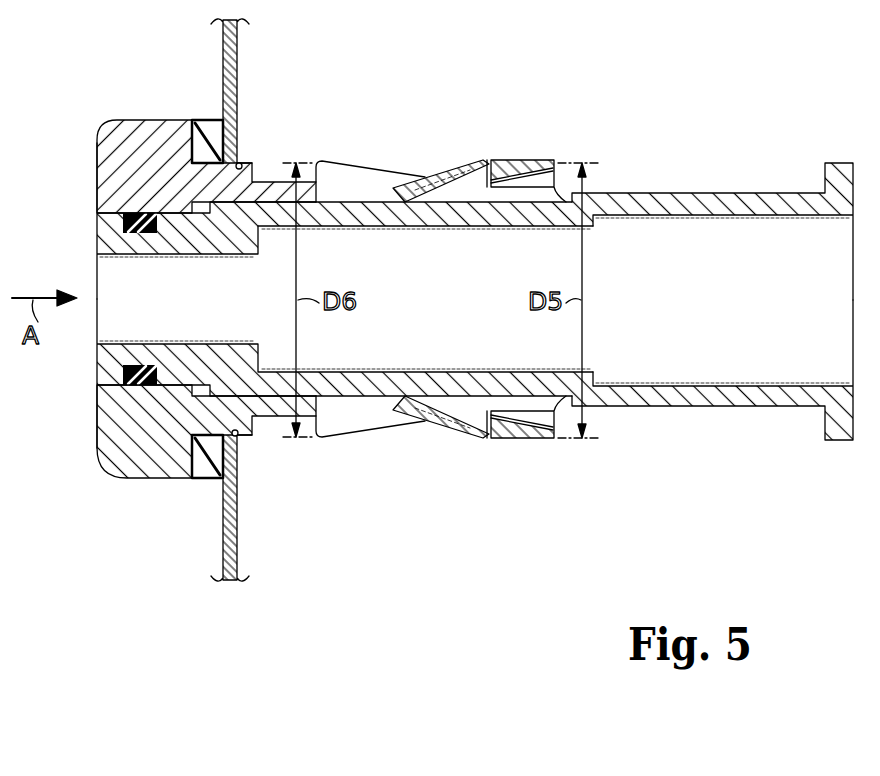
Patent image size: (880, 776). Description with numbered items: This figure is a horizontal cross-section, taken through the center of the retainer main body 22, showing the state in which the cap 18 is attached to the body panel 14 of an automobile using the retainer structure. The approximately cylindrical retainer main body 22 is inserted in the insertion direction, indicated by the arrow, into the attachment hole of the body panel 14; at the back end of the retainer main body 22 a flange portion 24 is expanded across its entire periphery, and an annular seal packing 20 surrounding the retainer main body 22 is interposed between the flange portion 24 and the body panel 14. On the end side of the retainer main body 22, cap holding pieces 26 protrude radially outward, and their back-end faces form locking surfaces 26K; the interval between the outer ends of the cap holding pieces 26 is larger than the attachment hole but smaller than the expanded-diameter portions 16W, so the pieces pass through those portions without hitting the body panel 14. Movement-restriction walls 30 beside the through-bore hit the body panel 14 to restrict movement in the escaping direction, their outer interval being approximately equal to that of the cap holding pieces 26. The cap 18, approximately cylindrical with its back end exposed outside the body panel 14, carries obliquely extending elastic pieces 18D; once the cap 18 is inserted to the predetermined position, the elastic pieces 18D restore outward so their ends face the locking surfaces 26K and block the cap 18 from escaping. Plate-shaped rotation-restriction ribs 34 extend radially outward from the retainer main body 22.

The body panel 14 is at (237, 563).
The expanded-diameter portions 16W is at (240, 160).
The cap 18 is at (708, 192).
The elastic pieces 18D is at (418, 175).
The seal packing 20 is at (204, 480).
The retainer main body 22 is at (142, 480).
The flange portion 24 is at (183, 118).
The cap holding pieces 26 is at (533, 168).
The locking surfaces 26K is at (487, 164).
The movement-restriction walls 30 is at (357, 175).
The rotation-restriction ribs 34 is at (254, 163).